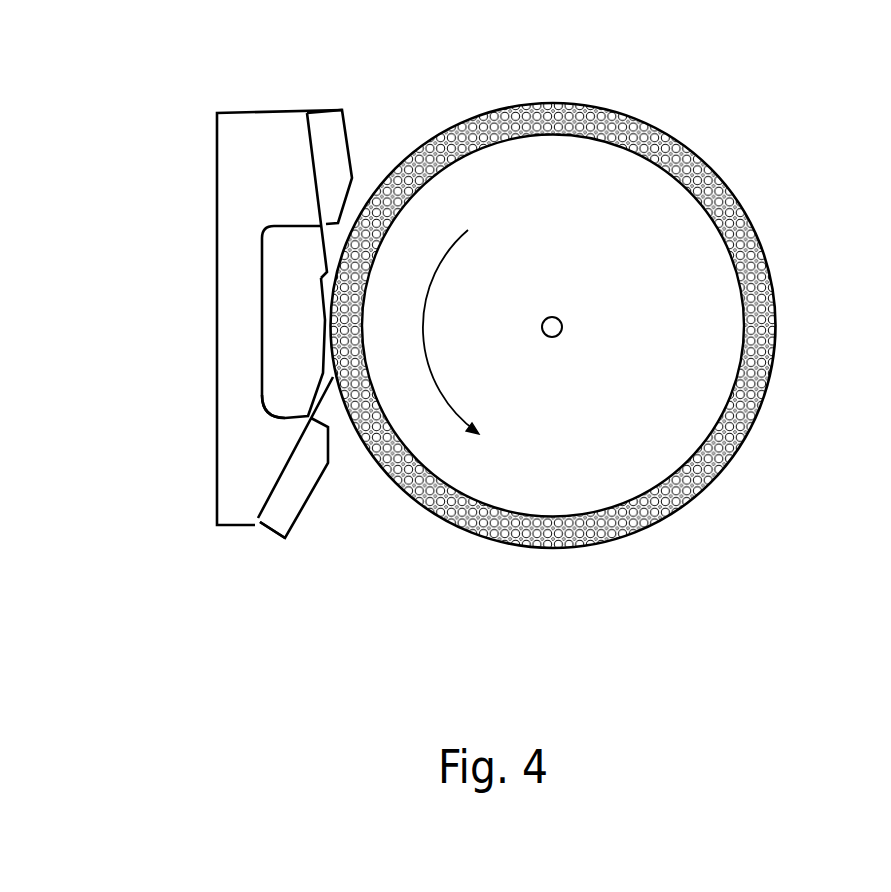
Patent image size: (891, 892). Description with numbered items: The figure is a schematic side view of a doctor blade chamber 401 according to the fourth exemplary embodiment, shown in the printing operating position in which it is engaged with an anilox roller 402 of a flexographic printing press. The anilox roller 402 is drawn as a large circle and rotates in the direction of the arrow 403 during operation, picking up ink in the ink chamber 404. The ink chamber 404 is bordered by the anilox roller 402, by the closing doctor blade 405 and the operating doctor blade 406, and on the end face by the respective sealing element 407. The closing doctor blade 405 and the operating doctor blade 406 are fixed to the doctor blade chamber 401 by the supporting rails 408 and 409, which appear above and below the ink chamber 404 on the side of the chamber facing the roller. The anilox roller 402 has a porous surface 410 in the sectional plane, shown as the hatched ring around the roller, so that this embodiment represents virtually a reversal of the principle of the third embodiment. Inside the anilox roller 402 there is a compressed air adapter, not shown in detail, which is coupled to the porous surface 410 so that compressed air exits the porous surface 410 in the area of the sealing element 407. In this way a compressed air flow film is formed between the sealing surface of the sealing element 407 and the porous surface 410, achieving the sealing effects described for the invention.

The doctor blade chamber 401 is at (222, 127).
The anilox roller 402 is at (692, 263).
The arrow 403 is at (483, 344).
The ink chamber 404 is at (320, 322).
The closing doctor blade 405 is at (318, 206).
The operating doctor blade 406 is at (290, 460).
The sealing element 407 is at (274, 387).
The supporting rail 408 is at (344, 118).
The supporting rail 409 is at (283, 518).
The porous surface 410 is at (752, 396).